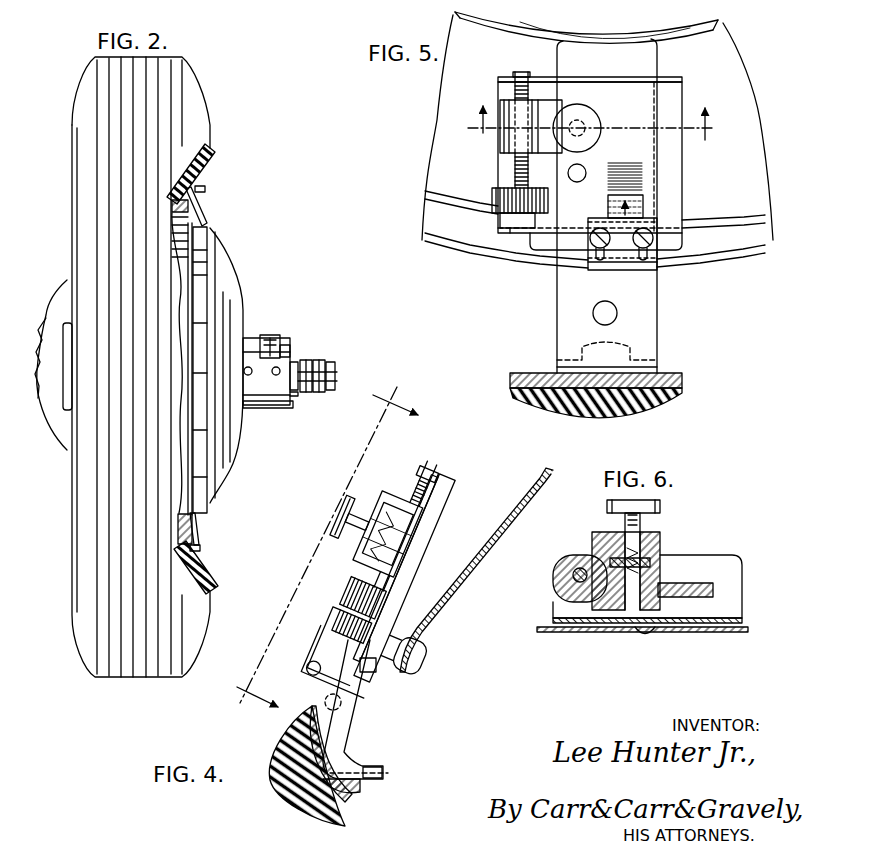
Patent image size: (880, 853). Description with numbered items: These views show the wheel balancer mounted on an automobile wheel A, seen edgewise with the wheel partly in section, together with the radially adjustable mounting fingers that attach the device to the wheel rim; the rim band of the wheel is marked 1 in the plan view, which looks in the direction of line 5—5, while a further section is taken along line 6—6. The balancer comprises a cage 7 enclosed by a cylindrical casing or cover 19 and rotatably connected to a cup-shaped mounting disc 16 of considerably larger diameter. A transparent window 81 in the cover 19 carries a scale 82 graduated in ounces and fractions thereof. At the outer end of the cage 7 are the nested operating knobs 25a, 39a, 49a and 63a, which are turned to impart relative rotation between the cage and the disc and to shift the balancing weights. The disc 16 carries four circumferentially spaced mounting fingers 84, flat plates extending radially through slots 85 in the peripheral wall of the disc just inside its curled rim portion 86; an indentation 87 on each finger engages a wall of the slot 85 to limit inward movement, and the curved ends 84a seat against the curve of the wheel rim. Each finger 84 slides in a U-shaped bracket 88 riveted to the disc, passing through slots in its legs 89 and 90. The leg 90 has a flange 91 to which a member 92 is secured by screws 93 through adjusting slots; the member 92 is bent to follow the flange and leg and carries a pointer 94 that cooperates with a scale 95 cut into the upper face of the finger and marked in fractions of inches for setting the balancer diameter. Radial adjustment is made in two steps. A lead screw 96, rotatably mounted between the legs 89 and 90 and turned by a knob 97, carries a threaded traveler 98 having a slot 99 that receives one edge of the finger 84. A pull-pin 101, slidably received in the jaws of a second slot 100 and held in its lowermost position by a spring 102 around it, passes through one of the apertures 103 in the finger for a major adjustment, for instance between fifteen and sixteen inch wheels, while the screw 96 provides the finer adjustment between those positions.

In FIG. 5, the wheel 1 is at (492, 33).
In FIG. 4, the line 5— 5 is at (334, 557).
In FIG. 5, the line 6— 6 is at (590, 114).
In FIG. 2, the cage 7 is at (290, 333).
In FIG. 2, the cup-shaped mounting disc 16 is at (233, 458).
In FIG. 5, the cup-shaped mounting disc 16 is at (743, 98).
In FIG. 4, the cup-shaped mounting disc 16 is at (533, 480).
In FIG. 6, the cup-shaped mounting disc 16 is at (583, 632).
In FIG. 2, the cylindrical casing or cover 19 is at (288, 352).
In FIG. 5, the cylindrical casing or cover 19 is at (700, 23).
In FIG. 2, the operating knob 25a is at (332, 360).
In FIG. 2, the operating knob 39a is at (315, 358).
In FIG. 2, the operating knob 49a is at (297, 395).
In FIG. 2, the operating knob 63a is at (287, 403).
In FIG. 2, the transparent window 81 is at (263, 335).
In FIG. 2, the scale 82 is at (277, 335).
In FIG. 2, the mounting fingers 84 is at (197, 212).
In FIG. 5, the mounting fingers 84 is at (653, 330).
In FIG. 4, the mounting fingers 84 is at (360, 693).
In FIG. 6, the mounting fingers 84 is at (712, 590).
In FIG. 2, the curved ends 84a is at (197, 187).
In FIG. 5, the curved ends 84a is at (637, 357).
In FIG. 4, the curved ends 84a is at (350, 777).
In FIG. 4, the slots 85 is at (368, 667).
In FIG. 2, the curled rim portion 86 is at (197, 260).
In FIG. 4, the curled rim portion 86 is at (318, 667).
In FIG. 5, the indentation 87 is at (593, 317).
In FIG. 4, the indentation 87 is at (330, 702).
In FIG. 5, the U-shaped bracket 88 is at (679, 96).
In FIG. 4, the U-shaped bracket 88 is at (465, 508).
In FIG. 6, the U-shaped bracket 88 is at (744, 588).
In FIG. 5, the leg 89 is at (542, 77).
In FIG. 4, the leg 89 is at (443, 477).
In FIG. 5, the leg 90 is at (510, 230).
In FIG. 4, the leg 90 is at (417, 643).
In FIG. 5, the flange 91 is at (492, 200).
In FIG. 4, the flange 91 is at (337, 638).
In FIG. 5, the member 92 is at (660, 263).
In FIG. 4, the member 92 is at (328, 640).
In FIG. 5, the screws 93 is at (663, 243).
In FIG. 4, the screws 93 is at (338, 613).
In FIG. 5, the pointer 94 is at (645, 197).
In FIG. 5, the scale 95 is at (608, 190).
In FIG. 5, the lead screw 96 is at (515, 173).
In FIG. 4, the lead screw 96 is at (415, 503).
In FIG. 6, the lead screw 96 is at (553, 580).
In FIG. 4, the knob 97 is at (345, 588).
In FIG. 5, the traveler 98 is at (563, 100).
In FIG. 4, the traveler 98 is at (388, 534).
In FIG. 6, the traveler 98 is at (592, 553).
In FIG. 6, the slot 99 is at (662, 590).
In FIG. 6, the second slot 100 is at (650, 562).
In FIG. 5, the pull-pin 101 is at (593, 117).
In FIG. 4, the pull-pin 101 is at (345, 515).
In FIG. 6, the pull-pin 101 is at (660, 506).
In FIG. 4, the spring 102 is at (365, 555).
In FIG. 6, the spring 102 is at (630, 553).
In FIG. 5, the apertures 103 is at (585, 167).
In FIG. 2, the automobile wheel A is at (202, 115).
In FIG. 5, the automobile wheel A is at (607, 420).
In FIG. 4, the automobile wheel A is at (272, 742).